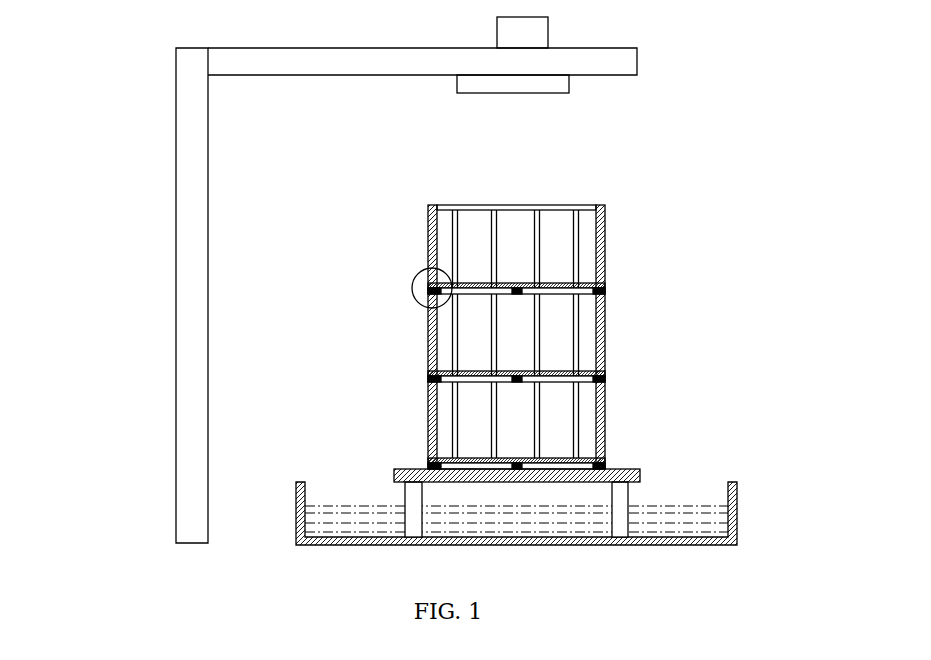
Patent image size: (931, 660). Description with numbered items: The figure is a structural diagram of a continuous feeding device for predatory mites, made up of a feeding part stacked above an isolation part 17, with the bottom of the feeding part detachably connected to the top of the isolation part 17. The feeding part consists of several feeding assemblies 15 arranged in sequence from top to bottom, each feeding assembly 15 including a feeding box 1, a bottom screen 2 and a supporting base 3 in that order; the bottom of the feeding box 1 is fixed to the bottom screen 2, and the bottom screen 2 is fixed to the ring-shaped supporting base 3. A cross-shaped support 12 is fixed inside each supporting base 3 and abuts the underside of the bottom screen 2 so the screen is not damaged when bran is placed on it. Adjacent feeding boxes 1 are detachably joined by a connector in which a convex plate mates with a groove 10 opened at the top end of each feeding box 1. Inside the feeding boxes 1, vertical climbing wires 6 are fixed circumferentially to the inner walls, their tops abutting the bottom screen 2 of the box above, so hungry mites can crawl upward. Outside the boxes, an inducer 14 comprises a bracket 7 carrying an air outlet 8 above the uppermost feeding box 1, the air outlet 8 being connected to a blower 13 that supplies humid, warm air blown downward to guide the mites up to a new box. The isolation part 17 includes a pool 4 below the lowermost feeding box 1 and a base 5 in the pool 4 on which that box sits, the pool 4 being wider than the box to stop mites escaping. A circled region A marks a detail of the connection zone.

The feeding box 1 is at (604, 253).
The bottom screen 2 is at (596, 283).
The supporting base 3 is at (605, 289).
The pool 4 is at (737, 505).
The base 5 is at (640, 472).
The climbing wire 6 is at (575, 240).
The bracket 7 is at (272, 62).
The air outlet 8 is at (503, 84).
The groove 10 is at (446, 267).
The cross-shaped support 12 is at (497, 383).
The blower 13 is at (523, 31).
The inducer 14 is at (75, 18).
The feeding assembly 15 is at (446, 327).
The isolation part 17 is at (584, 472).
The detail region A is at (413, 292).